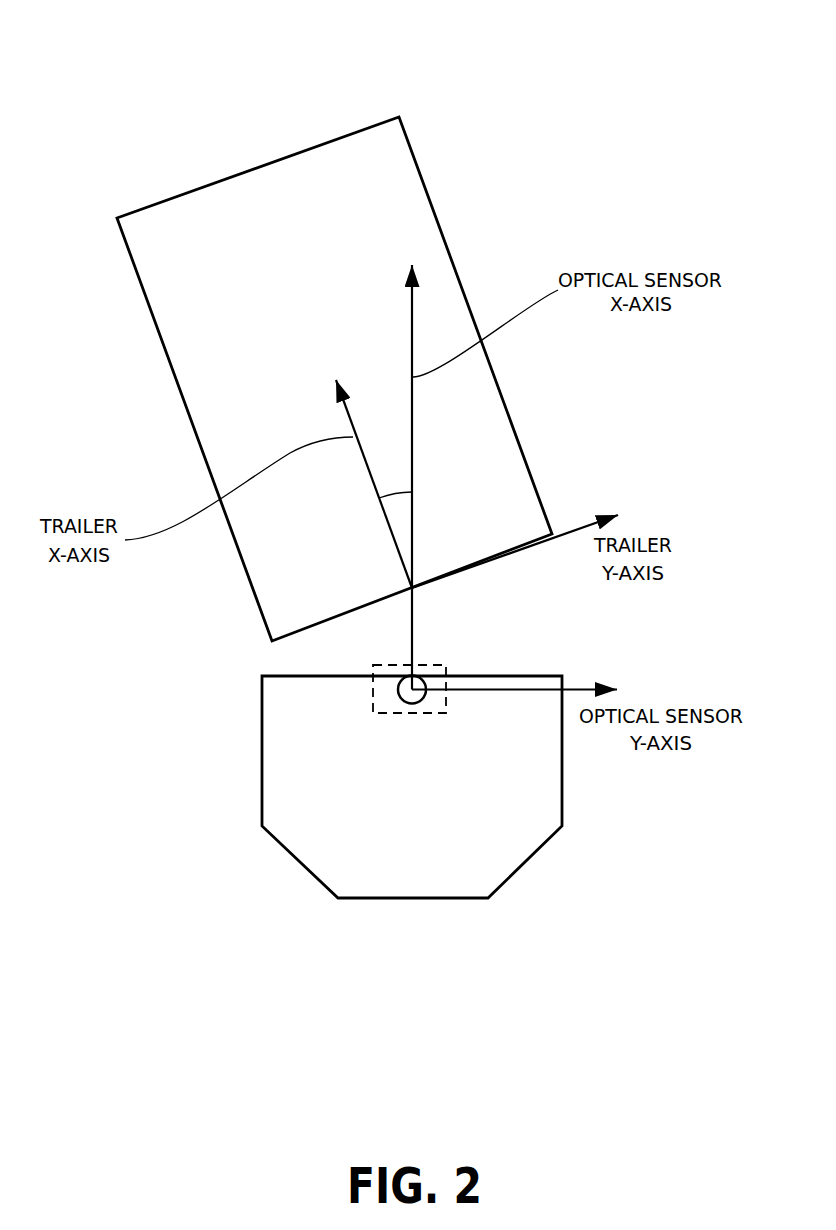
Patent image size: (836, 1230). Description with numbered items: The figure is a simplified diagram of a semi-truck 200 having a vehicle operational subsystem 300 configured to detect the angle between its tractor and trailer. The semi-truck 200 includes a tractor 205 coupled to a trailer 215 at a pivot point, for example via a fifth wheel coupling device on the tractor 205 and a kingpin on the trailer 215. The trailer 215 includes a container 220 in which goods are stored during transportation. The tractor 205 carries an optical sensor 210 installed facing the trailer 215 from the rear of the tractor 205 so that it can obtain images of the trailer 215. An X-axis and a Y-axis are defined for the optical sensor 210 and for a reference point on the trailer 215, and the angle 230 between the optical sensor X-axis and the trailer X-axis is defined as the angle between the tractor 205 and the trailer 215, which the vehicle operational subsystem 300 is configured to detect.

The semi-truck 200 is at (181, 56).
The tractor 205 is at (527, 862).
The optical sensor 210 is at (405, 704).
The trailer 215 is at (341, 379).
The container 220 is at (415, 152).
The angle 230 is at (396, 490).
The vehicle operational subsystem 300 is at (442, 665).